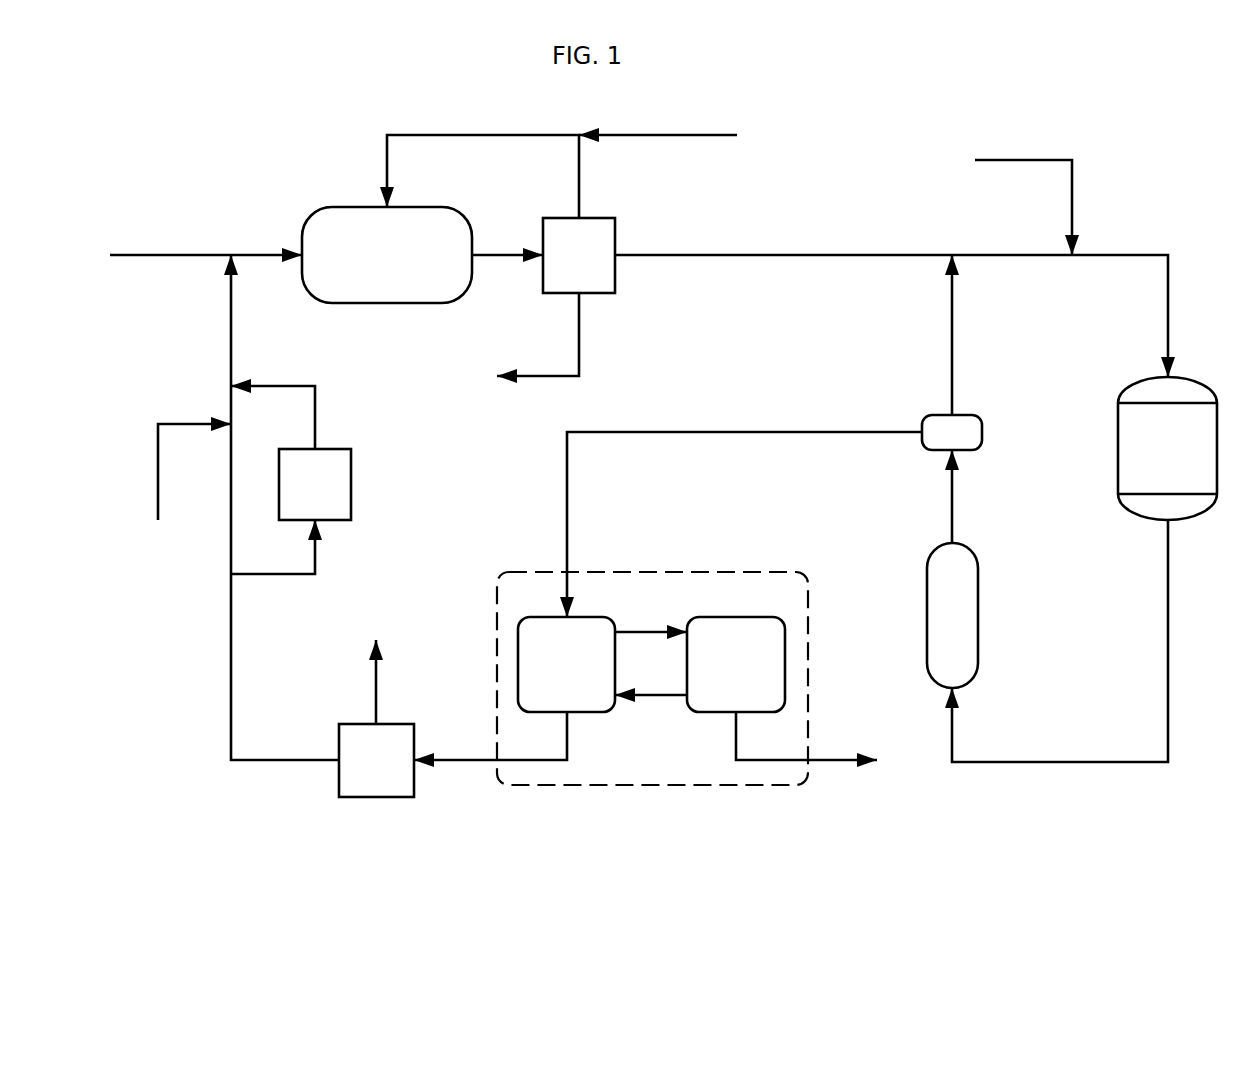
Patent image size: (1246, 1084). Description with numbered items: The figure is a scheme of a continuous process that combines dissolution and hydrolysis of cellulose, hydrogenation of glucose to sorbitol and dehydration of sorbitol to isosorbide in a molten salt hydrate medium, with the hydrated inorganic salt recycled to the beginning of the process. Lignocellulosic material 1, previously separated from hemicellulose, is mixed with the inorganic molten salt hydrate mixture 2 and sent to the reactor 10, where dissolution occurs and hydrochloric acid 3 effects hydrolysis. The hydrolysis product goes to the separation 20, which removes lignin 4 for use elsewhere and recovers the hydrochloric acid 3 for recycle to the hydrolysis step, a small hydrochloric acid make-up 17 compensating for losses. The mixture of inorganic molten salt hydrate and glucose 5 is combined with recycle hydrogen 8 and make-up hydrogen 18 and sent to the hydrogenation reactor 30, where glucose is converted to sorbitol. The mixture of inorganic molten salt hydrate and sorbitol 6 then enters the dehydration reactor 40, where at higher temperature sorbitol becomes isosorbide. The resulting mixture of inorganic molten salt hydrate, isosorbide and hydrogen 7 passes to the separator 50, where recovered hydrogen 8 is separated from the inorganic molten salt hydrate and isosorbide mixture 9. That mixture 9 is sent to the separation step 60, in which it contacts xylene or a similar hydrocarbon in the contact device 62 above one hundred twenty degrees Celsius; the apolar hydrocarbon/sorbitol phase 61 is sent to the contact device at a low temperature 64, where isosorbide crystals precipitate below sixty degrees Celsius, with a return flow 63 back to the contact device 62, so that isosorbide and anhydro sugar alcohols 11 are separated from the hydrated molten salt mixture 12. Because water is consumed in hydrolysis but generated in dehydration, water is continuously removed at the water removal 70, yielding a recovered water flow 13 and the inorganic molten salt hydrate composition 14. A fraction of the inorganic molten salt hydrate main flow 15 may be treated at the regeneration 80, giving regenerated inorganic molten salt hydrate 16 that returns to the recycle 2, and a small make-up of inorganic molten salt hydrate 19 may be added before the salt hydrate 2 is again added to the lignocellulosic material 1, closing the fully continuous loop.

The lignocellulosic biomass material 1 is at (186, 255).
The inorganic molten salt hydrate mixture 2 is at (230, 342).
The hydrochloric acid 3 is at (447, 135).
The lignin 4 is at (579, 340).
The mixture of inorganic molten salt hydrate and glucose 5 is at (833, 255).
The mixture of inorganic molten salt hydrate and sorbitol 6 is at (1168, 588).
The mixture of inorganic molten salt hydrate, isosorbide and hydrogen 7 is at (952, 505).
The recycle hydrogen 8 is at (952, 340).
The inorganic molten salt hydrate and isosorbide mixture 9 is at (762, 432).
The reactor 10 is at (385, 303).
The isosorbide and anhydro sugar alcohols 11 is at (828, 762).
The hydrated molten salt mixture 12 is at (470, 765).
The recovered water flow 13 is at (376, 683).
The inorganic molten salt hydrate composition 14 is at (231, 637).
The fraction of the inorganic molten salt hydrate main flow 15 is at (315, 555).
The regenerated inorganic molten salt hydrate 16 is at (315, 405).
The hydrochloric acid make-up 17 is at (700, 135).
The make-up hydrogen 18 is at (997, 160).
The make-up of inorganic molten salt hydrate 19 is at (158, 445).
The separation 20 is at (543, 255).
The hydrogenation reactor 30 is at (1167, 448).
The dehydration reactor 40 is at (952, 615).
The separator 50 is at (952, 432).
The separation step 60 is at (660, 572).
The apolar hydrocarbon/sorbitol phase 61 is at (651, 617).
The contact device 62 is at (566, 664).
The return flow 63 is at (651, 714).
The contact device at a low temperature 64 is at (736, 664).
The water removal 70 is at (376, 760).
The regeneration 80 is at (315, 484).